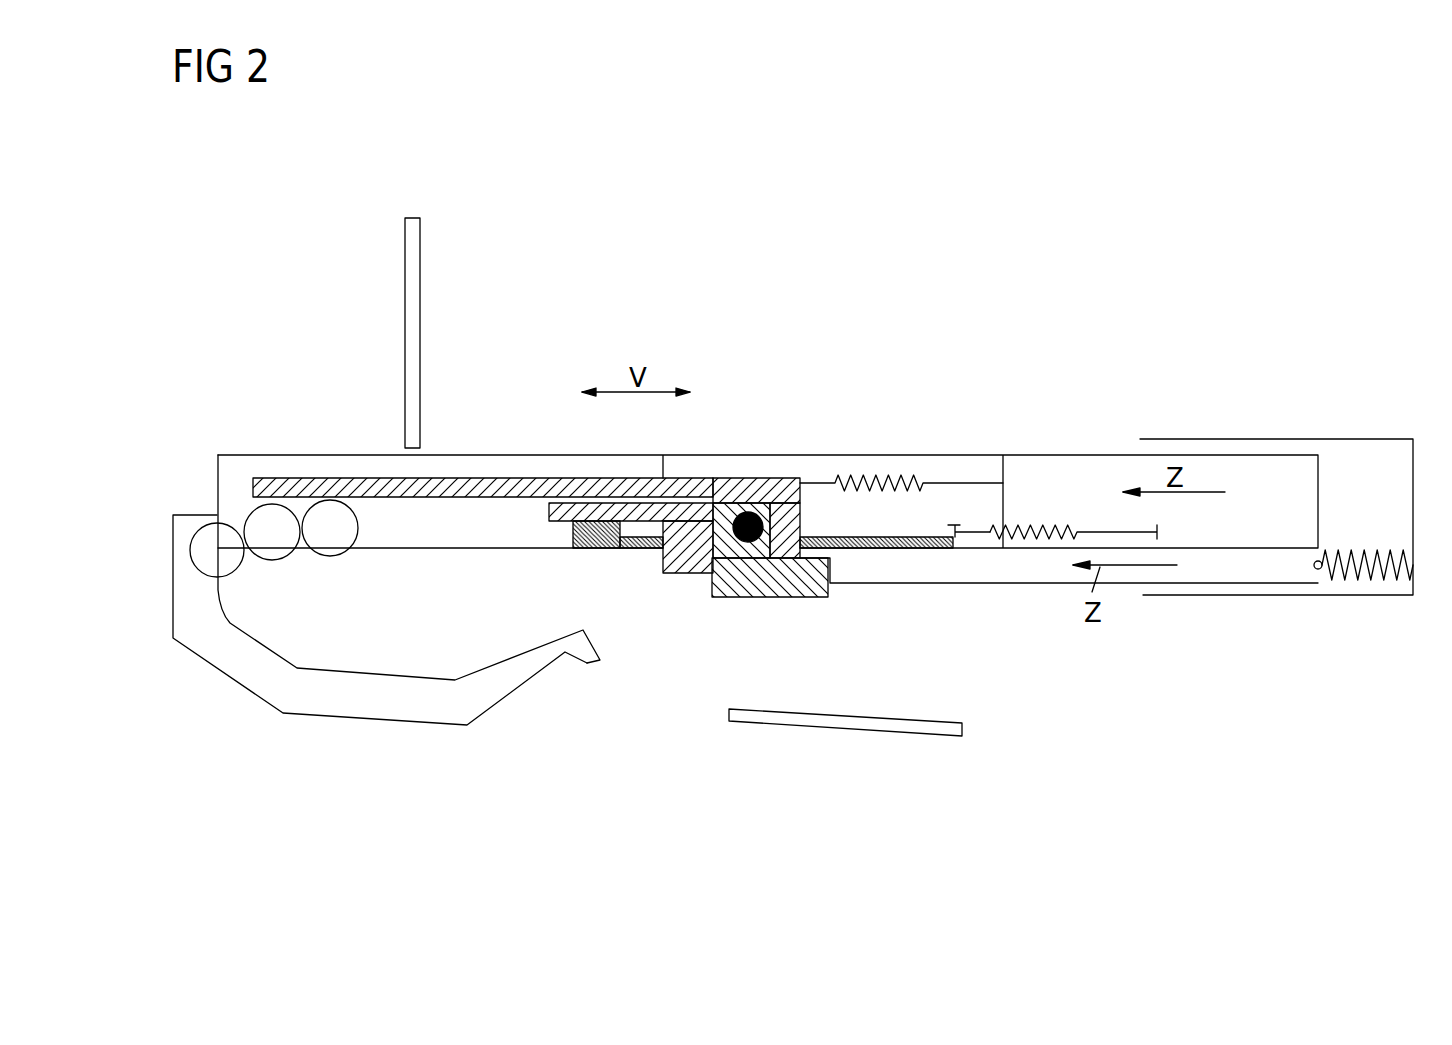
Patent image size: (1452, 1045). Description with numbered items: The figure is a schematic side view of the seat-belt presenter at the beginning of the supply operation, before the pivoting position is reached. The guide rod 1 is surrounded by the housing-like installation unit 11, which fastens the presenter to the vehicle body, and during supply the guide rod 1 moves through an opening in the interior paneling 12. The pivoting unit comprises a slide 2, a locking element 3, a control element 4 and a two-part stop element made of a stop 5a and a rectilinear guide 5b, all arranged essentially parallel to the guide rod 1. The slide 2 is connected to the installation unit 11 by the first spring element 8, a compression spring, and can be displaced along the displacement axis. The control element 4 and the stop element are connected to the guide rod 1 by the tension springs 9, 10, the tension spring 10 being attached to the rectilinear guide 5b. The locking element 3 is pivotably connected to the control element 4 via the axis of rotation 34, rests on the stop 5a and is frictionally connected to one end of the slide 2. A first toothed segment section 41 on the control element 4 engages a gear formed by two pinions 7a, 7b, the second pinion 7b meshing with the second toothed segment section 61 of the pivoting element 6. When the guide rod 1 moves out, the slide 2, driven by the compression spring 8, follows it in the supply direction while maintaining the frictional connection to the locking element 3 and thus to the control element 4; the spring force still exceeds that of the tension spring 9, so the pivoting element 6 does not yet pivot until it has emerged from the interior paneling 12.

The guide rod 1 is at (1073, 497).
The slide 2 is at (1237, 557).
The locking element 3 is at (768, 604).
The control element 4 is at (526, 489).
The first toothed segment section 41 is at (298, 488).
The stop 5a is at (577, 550).
The rectilinear guide 5b is at (630, 550).
The pivoting element 6 is at (408, 690).
The second toothed segment section 61 is at (212, 547).
The pinion 7a is at (327, 527).
The pinion 7b is at (268, 530).
The first spring element 8 is at (1337, 580).
The spring element 9 is at (867, 482).
The tension spring 10 is at (1030, 553).
The installation unit 11 is at (1146, 595).
The interior paneling 12 is at (420, 260).
The axis of rotation 34 is at (738, 550).